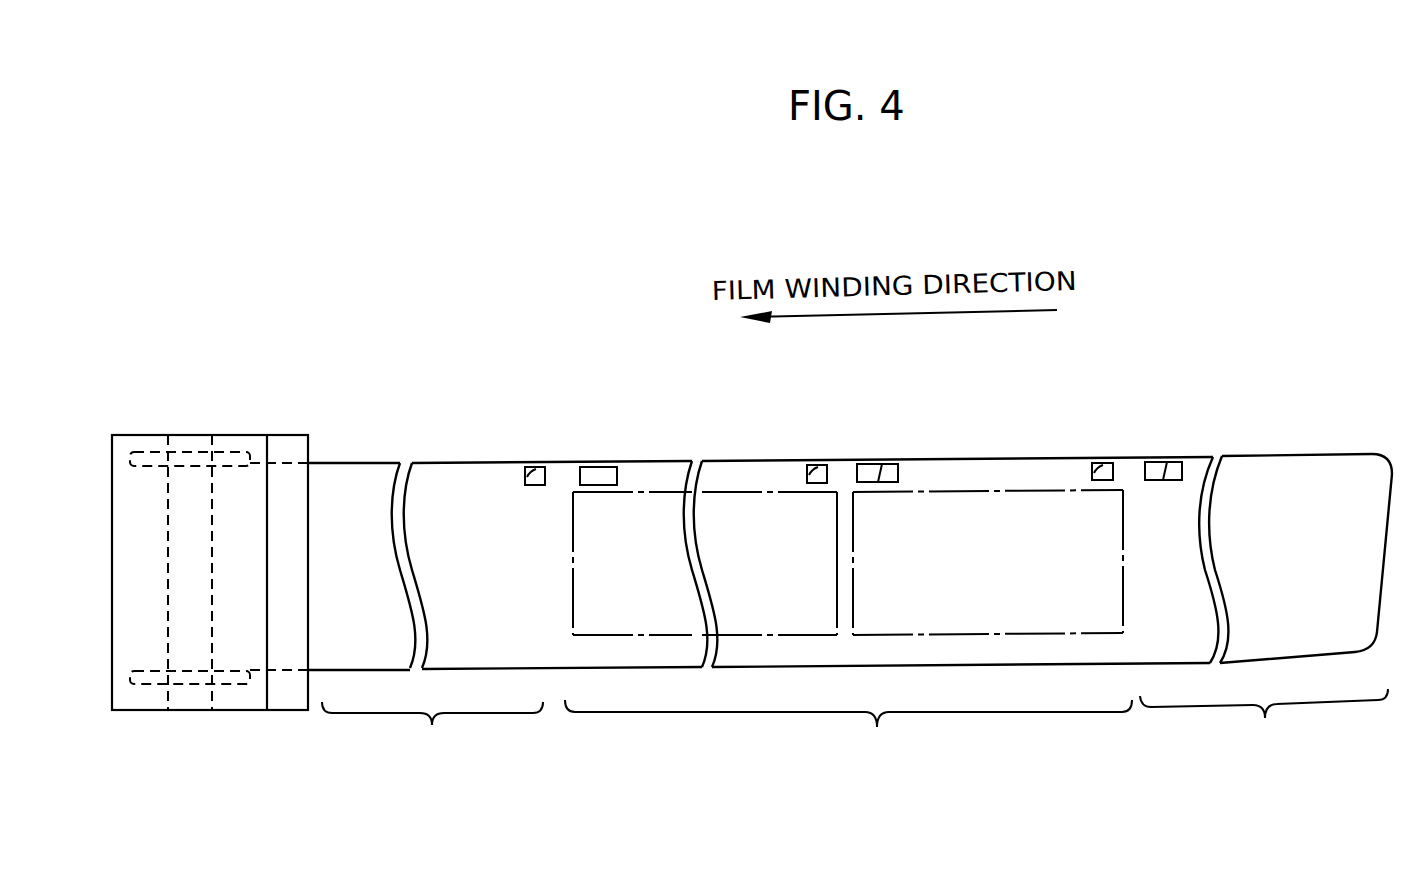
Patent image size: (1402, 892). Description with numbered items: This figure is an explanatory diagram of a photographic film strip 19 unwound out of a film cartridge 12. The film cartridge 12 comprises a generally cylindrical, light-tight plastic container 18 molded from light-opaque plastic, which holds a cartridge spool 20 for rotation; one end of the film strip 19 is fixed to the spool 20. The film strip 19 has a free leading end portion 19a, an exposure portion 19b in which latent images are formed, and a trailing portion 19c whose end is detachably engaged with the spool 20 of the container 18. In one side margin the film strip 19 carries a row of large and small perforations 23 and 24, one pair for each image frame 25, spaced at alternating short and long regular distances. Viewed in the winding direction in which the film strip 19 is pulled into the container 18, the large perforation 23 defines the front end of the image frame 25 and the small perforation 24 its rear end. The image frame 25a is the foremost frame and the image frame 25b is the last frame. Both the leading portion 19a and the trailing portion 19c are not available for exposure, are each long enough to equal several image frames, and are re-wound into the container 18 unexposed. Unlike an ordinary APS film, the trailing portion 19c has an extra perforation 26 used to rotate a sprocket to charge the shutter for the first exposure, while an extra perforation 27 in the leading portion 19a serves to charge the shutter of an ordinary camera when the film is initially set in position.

The film cartridge 12 is at (193, 428).
The light-tight plastic container 18 is at (152, 738).
The photographic film strip 19 is at (1276, 435).
The leading end portion 19a is at (1264, 727).
The exposure portion 19b is at (848, 736).
The trailing portion 19c is at (432, 737).
The cartridge spool 20 is at (232, 450).
The large perforation 23 is at (598, 484).
The small perforation 24 is at (815, 462).
The image frame 25 is at (837, 550).
The foremost image frame 25a is at (575, 574).
The last image frame 25b is at (857, 592).
The extra perforation 26 is at (534, 465).
The extra perforation 27 is at (1165, 462).